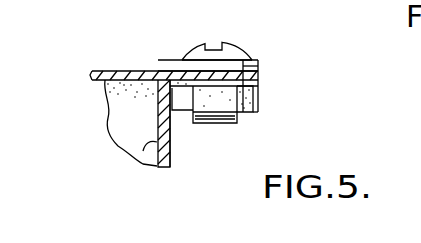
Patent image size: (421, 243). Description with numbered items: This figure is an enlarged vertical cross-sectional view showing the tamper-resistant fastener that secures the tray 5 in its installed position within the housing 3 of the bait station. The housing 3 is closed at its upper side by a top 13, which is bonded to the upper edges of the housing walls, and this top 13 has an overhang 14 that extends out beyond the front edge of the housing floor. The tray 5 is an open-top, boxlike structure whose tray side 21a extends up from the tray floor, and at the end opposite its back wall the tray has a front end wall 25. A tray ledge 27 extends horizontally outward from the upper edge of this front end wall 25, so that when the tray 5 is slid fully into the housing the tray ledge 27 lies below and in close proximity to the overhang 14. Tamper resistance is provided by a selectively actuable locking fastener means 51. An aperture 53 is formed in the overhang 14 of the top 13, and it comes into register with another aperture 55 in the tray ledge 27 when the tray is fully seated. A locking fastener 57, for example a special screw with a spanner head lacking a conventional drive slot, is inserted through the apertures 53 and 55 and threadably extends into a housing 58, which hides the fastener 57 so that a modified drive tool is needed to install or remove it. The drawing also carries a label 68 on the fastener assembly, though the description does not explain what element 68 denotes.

The housing 3 is at (99, 72).
The top 13 is at (125, 70).
The clamp cap 68 is at (159, 60).
The locking fastener 57 is at (181, 58).
The locking fastener means 51 is at (284, 26).
The aperture 53 is at (258, 63).
The overhang 14 is at (258, 75).
The tray ledge 27 is at (258, 83).
The aperture 55 is at (258, 108).
The housing 58 is at (240, 114).
The tray 5 is at (178, 142).
The tray side 21a is at (123, 108).
The front end wall 25 is at (155, 146).